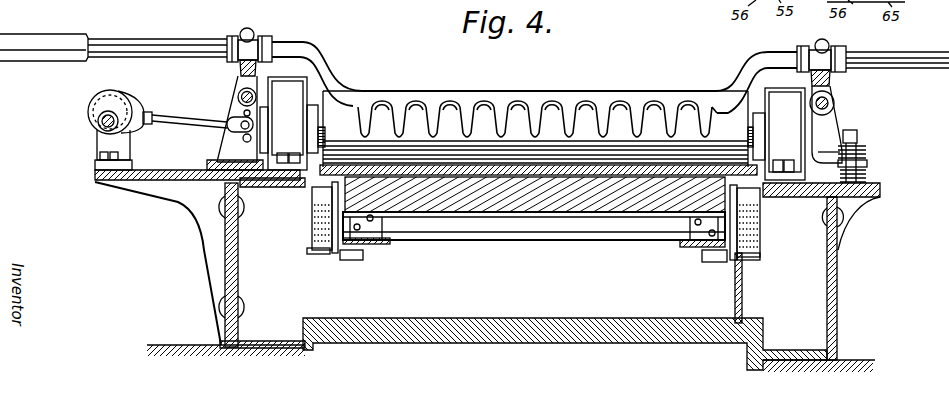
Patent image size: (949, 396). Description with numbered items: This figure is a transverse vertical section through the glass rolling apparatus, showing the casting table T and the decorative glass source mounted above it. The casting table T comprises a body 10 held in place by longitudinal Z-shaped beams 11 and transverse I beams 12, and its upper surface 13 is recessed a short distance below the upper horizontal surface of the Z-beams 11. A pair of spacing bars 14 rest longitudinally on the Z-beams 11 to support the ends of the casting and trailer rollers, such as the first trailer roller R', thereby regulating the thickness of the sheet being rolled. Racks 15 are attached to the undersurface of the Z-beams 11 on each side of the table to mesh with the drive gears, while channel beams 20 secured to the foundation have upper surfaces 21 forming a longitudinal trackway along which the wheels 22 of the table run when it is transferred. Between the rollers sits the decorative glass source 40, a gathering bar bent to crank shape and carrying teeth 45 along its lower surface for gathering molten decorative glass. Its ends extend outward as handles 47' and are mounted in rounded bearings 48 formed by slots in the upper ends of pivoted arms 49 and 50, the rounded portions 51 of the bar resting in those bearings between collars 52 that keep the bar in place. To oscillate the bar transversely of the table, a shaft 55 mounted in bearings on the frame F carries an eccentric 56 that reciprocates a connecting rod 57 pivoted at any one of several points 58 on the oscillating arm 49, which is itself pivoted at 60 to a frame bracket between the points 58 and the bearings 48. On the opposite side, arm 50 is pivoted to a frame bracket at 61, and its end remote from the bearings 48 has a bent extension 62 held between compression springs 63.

The handle ends of the gathering bar 47' is at (113, 34).
The collars 52 is at (229, 37).
The bearings 48 is at (249, 28).
The rounded portions 51 is at (263, 42).
The oscillating arm 49 is at (238, 78).
The pivot 60 is at (241, 95).
The pivot points 58 is at (240, 112).
The connecting rod 57 is at (173, 99).
The eccentric 56 is at (97, 108).
The shaft 55 is at (100, 130).
The decorative glass source 40 is at (494, 98).
The teeth 45 is at (606, 114).
The first trailer roller R' is at (535, 113).
The spacing bars 14 is at (333, 160).
The pivoted arm 50 is at (828, 84).
The pivot 61 is at (834, 103).
The compression springs 63 is at (862, 150).
The bent extension 62 is at (867, 163).
The Z-shaped beams 11 is at (320, 203).
The wheels 22 is at (320, 222).
The upper surfaces of channel beams 21 is at (317, 251).
The racks 15 is at (355, 258).
The channel beams 20 is at (332, 299).
The frame F is at (171, 191).
The casting table T is at (463, 193).
The upper surface of the table 13 is at (533, 180).
The transverse I beams 12 is at (603, 230).
The body 10 is at (653, 200).